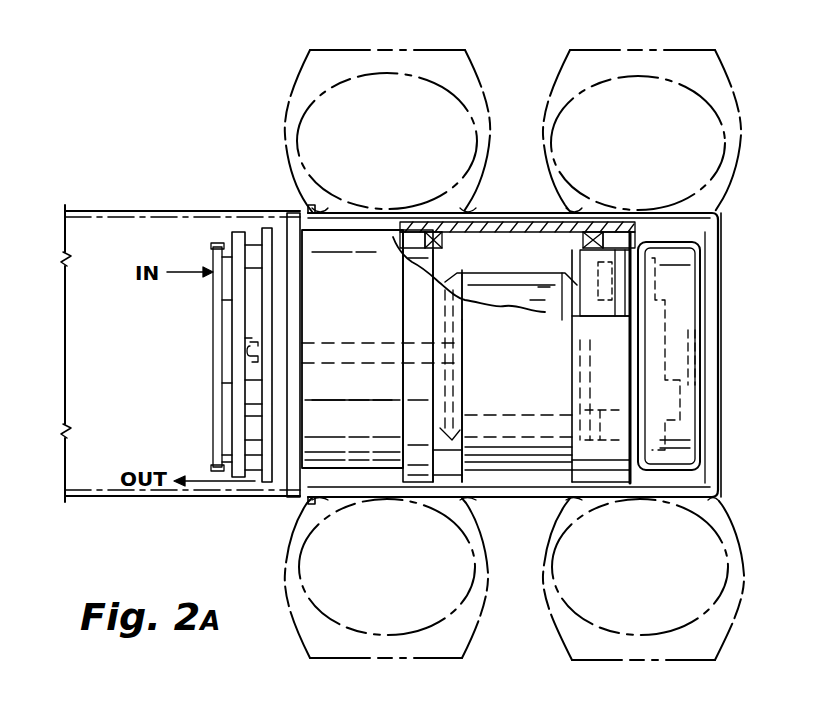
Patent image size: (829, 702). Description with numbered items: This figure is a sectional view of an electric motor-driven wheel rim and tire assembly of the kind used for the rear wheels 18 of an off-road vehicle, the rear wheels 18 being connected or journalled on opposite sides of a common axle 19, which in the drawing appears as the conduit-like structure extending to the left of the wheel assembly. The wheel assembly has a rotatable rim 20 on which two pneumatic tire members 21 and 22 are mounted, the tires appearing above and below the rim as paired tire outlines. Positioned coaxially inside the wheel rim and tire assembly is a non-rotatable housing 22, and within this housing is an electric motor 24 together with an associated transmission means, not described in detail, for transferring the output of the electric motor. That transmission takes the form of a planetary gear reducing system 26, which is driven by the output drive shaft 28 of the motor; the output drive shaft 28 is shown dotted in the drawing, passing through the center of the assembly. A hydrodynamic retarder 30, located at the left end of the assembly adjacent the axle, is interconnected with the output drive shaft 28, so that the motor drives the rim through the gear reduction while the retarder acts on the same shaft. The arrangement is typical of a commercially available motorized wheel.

The rear wheels 18 is at (214, 145).
The common axle 19 is at (107, 211).
The rotatable rim 20 is at (515, 213).
The pneumatic tire member 21 is at (310, 50).
The pneumatic tire member / non-rotatable housing 22 is at (580, 50).
The electric motor 24 is at (504, 278).
The planetary gear reducing system 26 is at (362, 313).
The output drive shaft 28 is at (345, 362).
The hydrodynamic retarder 30 is at (243, 240).